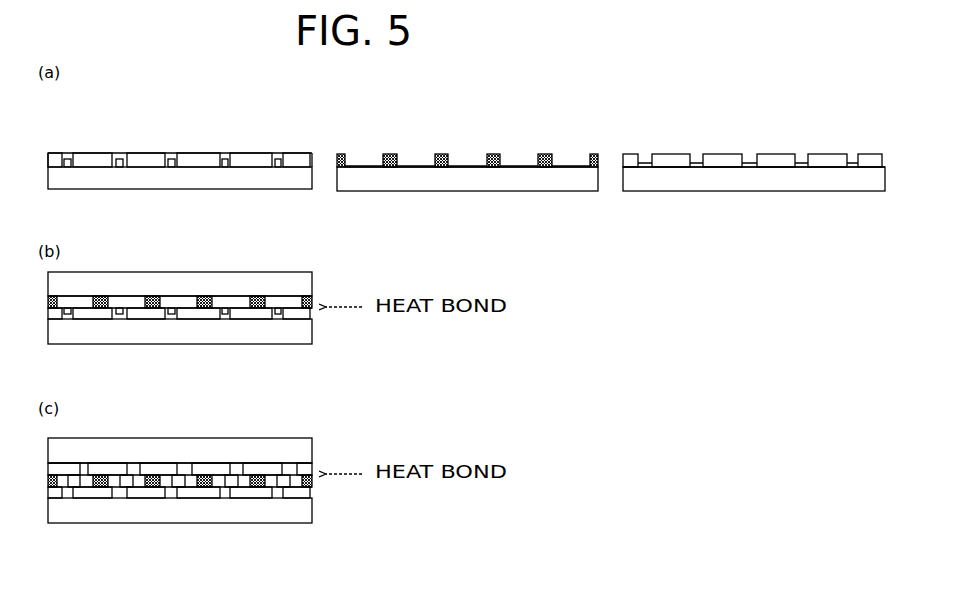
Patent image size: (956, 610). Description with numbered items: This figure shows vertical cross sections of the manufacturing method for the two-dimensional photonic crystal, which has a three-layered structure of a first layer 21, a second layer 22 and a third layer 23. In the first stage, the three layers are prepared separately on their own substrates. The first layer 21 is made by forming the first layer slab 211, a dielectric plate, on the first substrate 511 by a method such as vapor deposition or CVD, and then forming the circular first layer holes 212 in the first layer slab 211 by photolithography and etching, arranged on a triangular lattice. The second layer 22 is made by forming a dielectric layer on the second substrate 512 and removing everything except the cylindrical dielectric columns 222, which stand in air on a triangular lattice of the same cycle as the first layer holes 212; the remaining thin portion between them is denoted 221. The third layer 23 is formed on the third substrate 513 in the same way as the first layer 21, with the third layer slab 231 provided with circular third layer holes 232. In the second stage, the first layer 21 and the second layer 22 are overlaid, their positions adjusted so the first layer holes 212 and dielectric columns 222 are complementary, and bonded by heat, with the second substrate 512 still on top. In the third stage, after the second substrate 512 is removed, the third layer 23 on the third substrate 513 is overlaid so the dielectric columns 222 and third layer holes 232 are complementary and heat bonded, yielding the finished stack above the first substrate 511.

The first layer 21 is at (195, 112).
The first layer slab 211 is at (142, 157).
The first layer holes 212 is at (68, 157).
The second layer 22 is at (497, 112).
The second layer thin film 221 is at (363, 157).
The dielectric columns 222 is at (445, 157).
The third layer 23 is at (825, 112).
The third layer slab 231 is at (770, 157).
The third layer holes 232 is at (698, 157).
The first substrate 511 is at (140, 177).
The second substrate 512 is at (442, 177).
The third substrate 513 is at (730, 177).